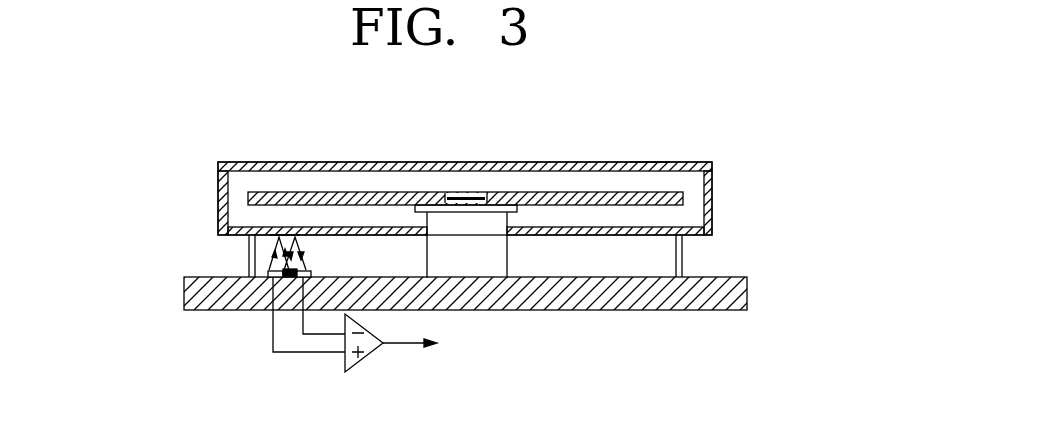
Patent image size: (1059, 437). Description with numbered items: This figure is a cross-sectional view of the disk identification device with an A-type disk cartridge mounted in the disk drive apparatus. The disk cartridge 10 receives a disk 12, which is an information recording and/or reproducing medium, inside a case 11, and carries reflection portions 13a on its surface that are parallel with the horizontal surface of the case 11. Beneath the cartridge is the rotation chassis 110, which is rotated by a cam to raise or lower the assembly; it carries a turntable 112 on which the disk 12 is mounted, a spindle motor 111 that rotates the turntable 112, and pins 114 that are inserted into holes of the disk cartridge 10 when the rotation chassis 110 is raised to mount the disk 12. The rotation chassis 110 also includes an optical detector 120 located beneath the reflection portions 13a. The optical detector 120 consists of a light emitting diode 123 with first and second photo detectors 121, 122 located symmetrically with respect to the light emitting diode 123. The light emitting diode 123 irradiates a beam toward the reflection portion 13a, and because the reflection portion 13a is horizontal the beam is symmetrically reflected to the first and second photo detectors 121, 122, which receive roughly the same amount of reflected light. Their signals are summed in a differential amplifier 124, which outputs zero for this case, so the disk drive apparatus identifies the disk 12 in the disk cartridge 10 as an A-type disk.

The disk cartridge 10 is at (442, 150).
The case 11 is at (220, 180).
The reflection portions 13a is at (648, 163).
The disk 12 is at (683, 195).
The turntable 112 is at (483, 194).
The spindle motor 111 is at (498, 262).
The pins 114 is at (248, 245).
The rotation chassis 110 is at (632, 298).
The optical detector 120 is at (245, 266).
The first photo detector 121 is at (257, 277).
The second photo detector 122 is at (282, 272).
The light emitting diode (LED) 123 is at (270, 277).
The differential amplifier 124 is at (365, 360).